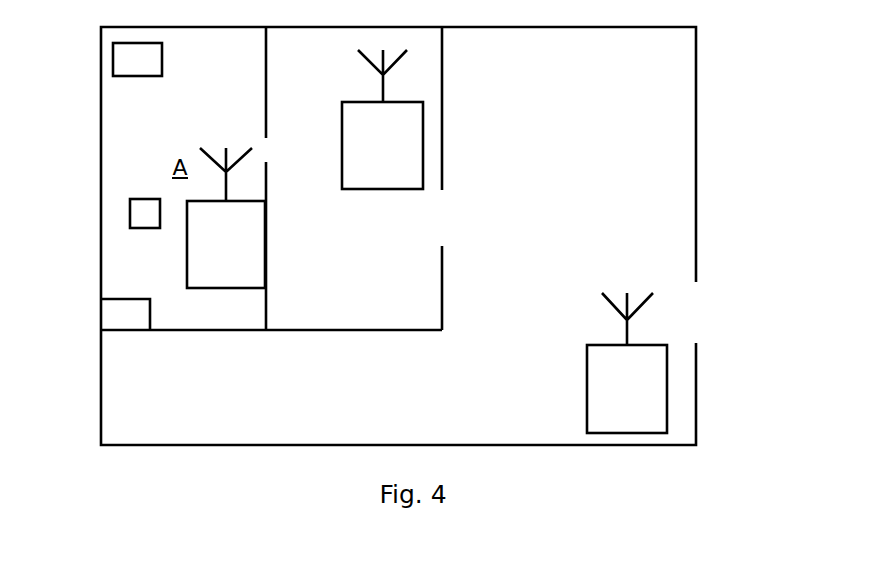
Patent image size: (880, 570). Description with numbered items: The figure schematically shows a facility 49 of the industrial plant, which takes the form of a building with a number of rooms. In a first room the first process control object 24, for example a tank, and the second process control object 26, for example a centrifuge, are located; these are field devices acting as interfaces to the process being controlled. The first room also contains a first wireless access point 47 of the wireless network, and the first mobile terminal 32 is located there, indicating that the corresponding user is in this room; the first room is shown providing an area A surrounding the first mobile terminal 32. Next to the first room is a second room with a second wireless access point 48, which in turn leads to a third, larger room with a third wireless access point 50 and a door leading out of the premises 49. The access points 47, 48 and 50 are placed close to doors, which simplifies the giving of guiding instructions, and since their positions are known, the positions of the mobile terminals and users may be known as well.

The first process control object 24 is at (125, 314).
The second process control object 26 is at (137, 59).
The first mobile terminal 32 is at (150, 229).
The first wireless access point 47 is at (226, 218).
The second wireless access point 48 is at (382, 119).
The facility 49 is at (696, 136).
The third wireless access point 50 is at (627, 363).